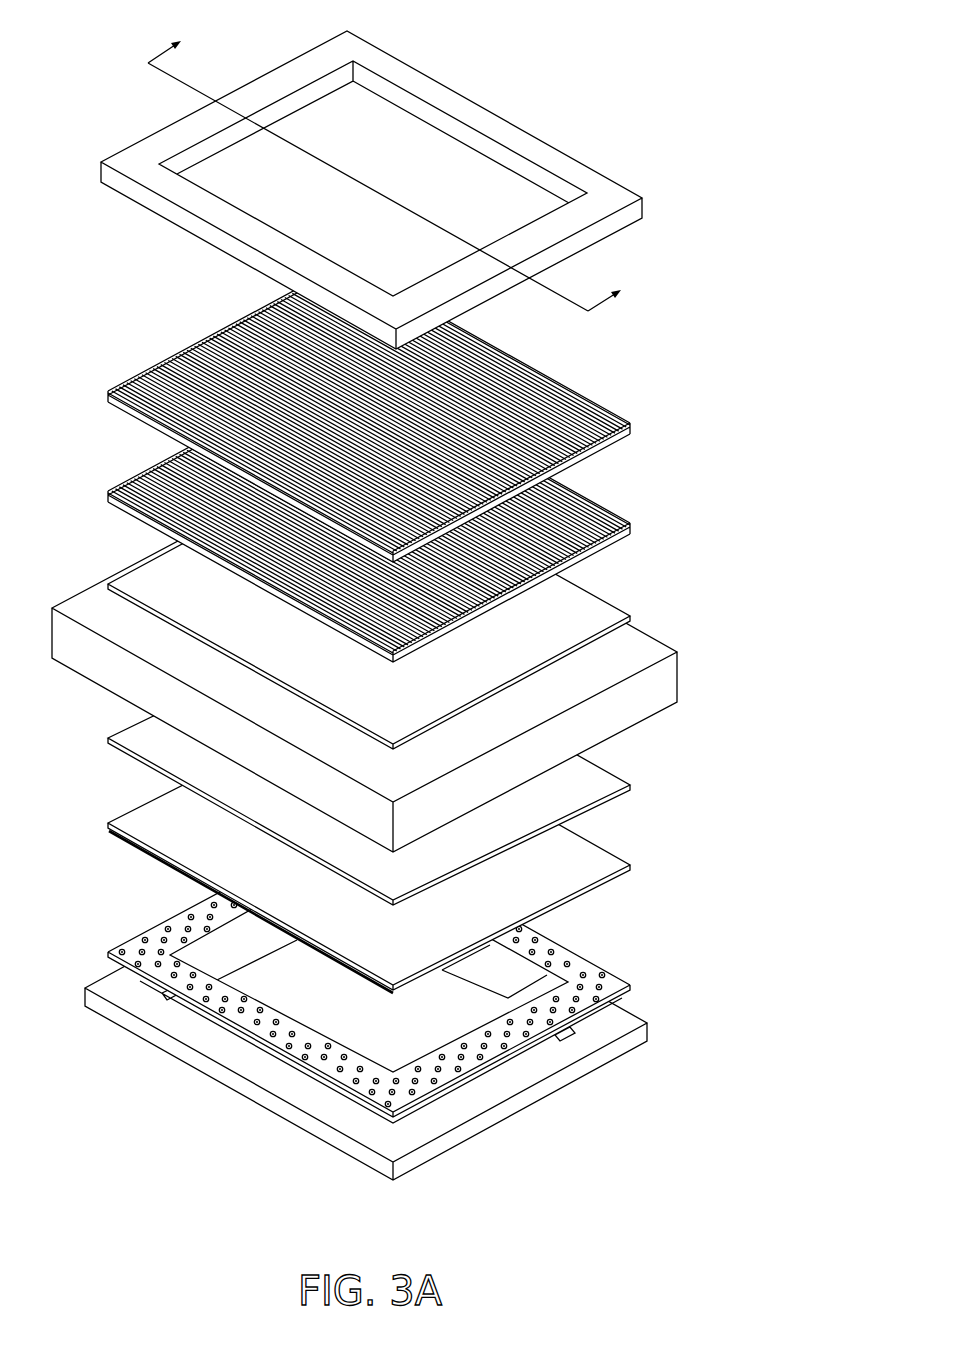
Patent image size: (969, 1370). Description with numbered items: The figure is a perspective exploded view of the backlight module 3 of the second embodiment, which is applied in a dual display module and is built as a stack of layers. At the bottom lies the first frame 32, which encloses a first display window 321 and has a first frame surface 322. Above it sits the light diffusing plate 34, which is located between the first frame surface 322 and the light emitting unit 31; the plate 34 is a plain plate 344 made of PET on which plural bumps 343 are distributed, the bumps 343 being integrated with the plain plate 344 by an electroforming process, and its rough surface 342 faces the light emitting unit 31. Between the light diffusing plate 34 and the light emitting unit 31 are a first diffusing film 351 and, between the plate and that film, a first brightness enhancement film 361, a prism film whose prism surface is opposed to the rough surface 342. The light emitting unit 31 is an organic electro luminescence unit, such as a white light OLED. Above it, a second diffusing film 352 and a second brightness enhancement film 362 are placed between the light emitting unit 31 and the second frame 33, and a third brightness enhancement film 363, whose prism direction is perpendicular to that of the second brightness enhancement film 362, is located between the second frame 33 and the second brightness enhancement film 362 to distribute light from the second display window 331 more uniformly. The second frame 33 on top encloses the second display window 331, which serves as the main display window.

The backlight module 3 is at (391, 592).
The light emitting unit 31 is at (666, 680).
The first frame 32 is at (407, 1014).
The first display window 321 is at (405, 1113).
The first frame surface 322 is at (518, 1083).
The second frame 33 is at (409, 190).
The second display window 331 is at (522, 193).
The light diffusing plate 34 is at (381, 971).
The rough surface 342 is at (593, 962).
The bumps 343 is at (148, 936).
The plain plate 344 is at (110, 953).
The first diffusing film 351 is at (632, 779).
The second diffusing film 352 is at (632, 616).
The first brightness enhancement film 361 is at (632, 863).
The second brightness enhancement film 362 is at (632, 533).
The third brightness enhancement film 363 is at (632, 432).